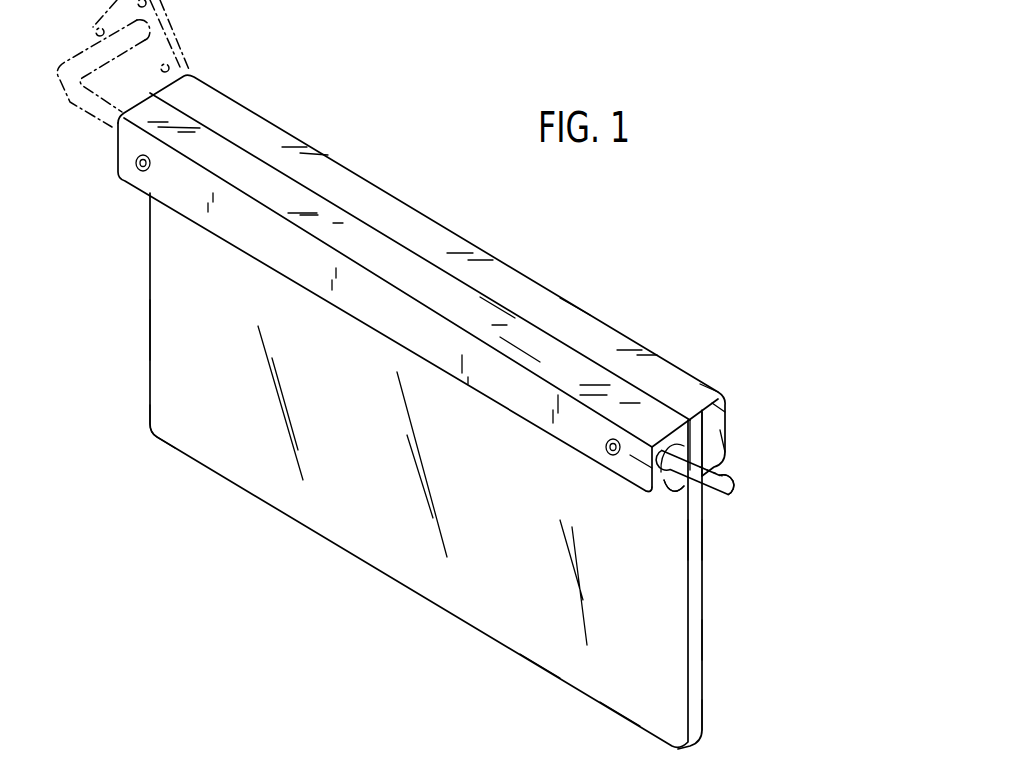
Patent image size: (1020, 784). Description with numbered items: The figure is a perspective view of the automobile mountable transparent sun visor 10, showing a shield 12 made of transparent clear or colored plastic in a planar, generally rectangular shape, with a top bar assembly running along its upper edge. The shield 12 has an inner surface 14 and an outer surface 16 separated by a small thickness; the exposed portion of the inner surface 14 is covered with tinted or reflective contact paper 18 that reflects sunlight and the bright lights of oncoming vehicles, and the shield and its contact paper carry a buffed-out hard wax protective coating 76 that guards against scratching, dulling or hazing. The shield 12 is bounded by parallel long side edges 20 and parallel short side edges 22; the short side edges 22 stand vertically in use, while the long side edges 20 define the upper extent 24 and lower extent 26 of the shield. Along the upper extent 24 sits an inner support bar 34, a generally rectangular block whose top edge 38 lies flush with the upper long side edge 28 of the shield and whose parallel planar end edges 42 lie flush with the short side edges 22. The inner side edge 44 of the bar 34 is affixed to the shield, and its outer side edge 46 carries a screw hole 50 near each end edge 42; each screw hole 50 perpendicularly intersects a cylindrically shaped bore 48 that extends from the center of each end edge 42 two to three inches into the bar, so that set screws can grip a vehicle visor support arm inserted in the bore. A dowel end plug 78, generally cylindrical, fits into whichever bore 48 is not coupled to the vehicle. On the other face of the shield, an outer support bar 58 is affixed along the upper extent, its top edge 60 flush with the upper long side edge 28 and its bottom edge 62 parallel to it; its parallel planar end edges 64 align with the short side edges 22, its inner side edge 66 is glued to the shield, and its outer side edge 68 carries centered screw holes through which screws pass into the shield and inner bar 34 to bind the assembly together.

The automobile mountable transparent sun visor 10 is at (337, 154).
The shield 12 is at (698, 598).
The inner surface 14 is at (670, 722).
The outer surface 16 is at (702, 681).
The contact paper 18 is at (290, 514).
The long side edges 20 is at (515, 275).
The short side edges 22 is at (150, 300).
The upper extent 24 is at (700, 432).
The lower extent 26 is at (698, 720).
The upper long side edge 28 is at (590, 315).
The inner support bar 34 is at (528, 403).
The top edge 38 is at (520, 342).
The end edges 42 is at (674, 492).
The inner side edge 44 is at (648, 486).
The outer side edge 46 is at (640, 464).
The bore 48 is at (664, 488).
The screw hole 50 is at (136, 162).
The outer support bar 58 is at (396, 193).
The top edge 60 is at (455, 244).
The bottom edge 62 is at (733, 467).
The end edges 64 is at (718, 418).
The inner side edge 66 is at (700, 382).
The outer side edge 68 is at (727, 443).
The hard wax protective coating 76 is at (177, 424).
The dowel end plug 78 is at (735, 492).